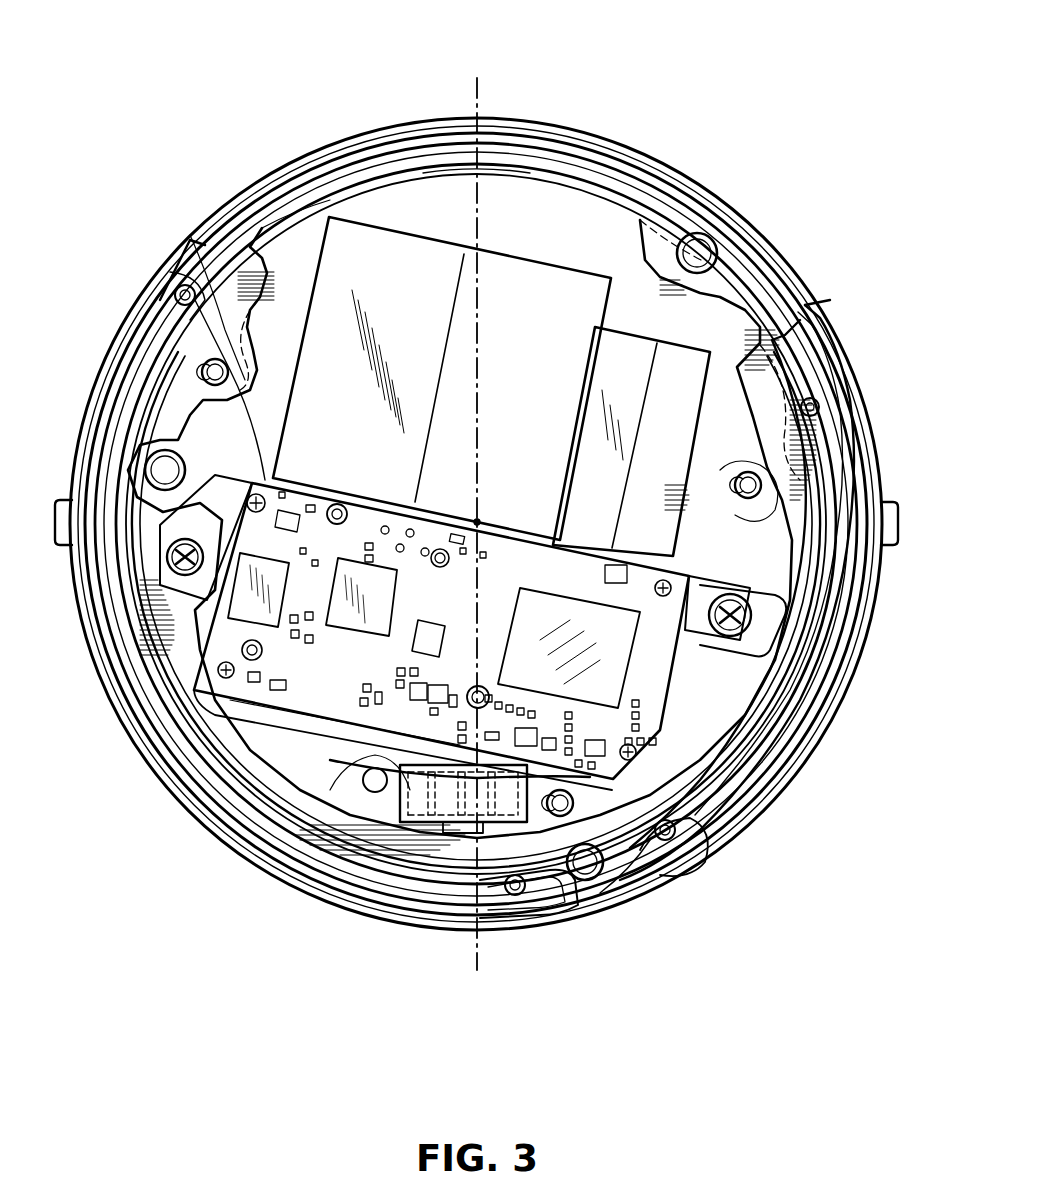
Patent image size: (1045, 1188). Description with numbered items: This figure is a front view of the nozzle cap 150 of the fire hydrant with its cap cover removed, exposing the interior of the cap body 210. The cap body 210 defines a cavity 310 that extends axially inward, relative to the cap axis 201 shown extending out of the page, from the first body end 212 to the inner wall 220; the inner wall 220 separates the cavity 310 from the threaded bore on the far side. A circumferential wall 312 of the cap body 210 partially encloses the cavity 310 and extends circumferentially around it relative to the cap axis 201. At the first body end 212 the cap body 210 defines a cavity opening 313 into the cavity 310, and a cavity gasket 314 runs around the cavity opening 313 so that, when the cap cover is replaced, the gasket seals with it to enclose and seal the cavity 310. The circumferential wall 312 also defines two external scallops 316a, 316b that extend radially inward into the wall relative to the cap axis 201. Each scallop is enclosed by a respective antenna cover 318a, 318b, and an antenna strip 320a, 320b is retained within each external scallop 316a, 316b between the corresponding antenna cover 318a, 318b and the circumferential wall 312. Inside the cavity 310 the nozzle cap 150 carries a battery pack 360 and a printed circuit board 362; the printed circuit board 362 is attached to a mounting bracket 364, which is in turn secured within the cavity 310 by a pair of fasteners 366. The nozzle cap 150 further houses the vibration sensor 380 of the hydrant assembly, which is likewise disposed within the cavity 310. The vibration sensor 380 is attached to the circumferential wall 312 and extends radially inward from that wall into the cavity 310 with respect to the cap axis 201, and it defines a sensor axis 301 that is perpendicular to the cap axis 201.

The nozzle cap 150 is at (125, 85).
The cap axis 201 is at (478, 521).
The cap body 210 is at (780, 275).
The first body end 212 is at (705, 228).
The inner wall 220 is at (628, 240).
The sensor axis 301 is at (474, 106).
The cavity 310 is at (300, 240).
The circumferential wall 312 is at (540, 175).
The cavity opening 313 is at (588, 195).
The cavity gasket 314 is at (780, 325).
The external scallop 316a is at (558, 905).
The external scallop 316b is at (630, 903).
The antenna cover 318a is at (430, 915).
The antenna cover 318b is at (703, 850).
The antenna strip 320a is at (300, 765).
The antenna strip 320b is at (785, 652).
The battery pack 360 is at (362, 252).
The printed circuit board 362 is at (272, 697).
The mounting bracket 364 is at (160, 522).
The fasteners 366 is at (185, 557).
The vibration sensor 380 is at (399, 800).